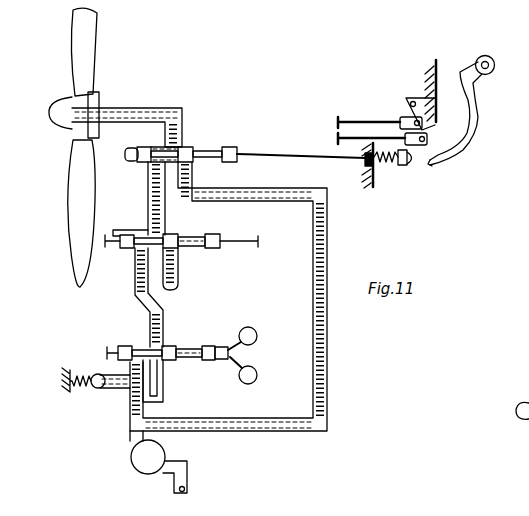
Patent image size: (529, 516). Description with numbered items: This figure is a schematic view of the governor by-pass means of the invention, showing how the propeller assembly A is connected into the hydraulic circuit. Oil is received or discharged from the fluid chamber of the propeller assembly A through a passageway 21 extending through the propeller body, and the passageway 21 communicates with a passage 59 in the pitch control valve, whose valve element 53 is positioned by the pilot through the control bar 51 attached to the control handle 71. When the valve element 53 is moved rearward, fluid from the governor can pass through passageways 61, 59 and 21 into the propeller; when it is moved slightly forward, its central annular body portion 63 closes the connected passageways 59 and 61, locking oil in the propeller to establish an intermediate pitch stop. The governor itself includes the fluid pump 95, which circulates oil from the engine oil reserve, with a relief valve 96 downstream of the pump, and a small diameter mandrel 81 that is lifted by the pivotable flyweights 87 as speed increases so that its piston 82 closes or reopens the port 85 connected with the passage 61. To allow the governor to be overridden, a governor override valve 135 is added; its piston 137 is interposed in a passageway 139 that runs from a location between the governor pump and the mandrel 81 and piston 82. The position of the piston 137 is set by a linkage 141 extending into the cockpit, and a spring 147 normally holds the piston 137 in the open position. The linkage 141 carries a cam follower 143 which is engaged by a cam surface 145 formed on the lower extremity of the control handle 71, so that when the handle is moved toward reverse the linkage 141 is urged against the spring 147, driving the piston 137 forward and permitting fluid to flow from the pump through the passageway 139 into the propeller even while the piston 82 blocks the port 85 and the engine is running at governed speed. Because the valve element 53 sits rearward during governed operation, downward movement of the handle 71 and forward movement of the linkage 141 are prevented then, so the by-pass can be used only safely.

The propeller assembly A is at (54, 161).
The passageway 21 is at (155, 108).
The control bar 51 is at (391, 120).
The valve element 53 is at (107, 247).
The passage 59 is at (150, 214).
The passageway 61 is at (135, 291).
The central annular body portion 63 is at (173, 236).
The control handle 71 is at (469, 92).
The small diameter mandrel 81 is at (194, 350).
The piston 82 is at (168, 359).
The port 85 is at (164, 391).
The flyweights 87 is at (244, 373).
The fluid pump 95 is at (163, 452).
The relief valve 96 is at (91, 374).
The governor override valve 135 is at (221, 169).
The piston 137 is at (190, 149).
The passageway 139 is at (283, 188).
The linkage 141 is at (306, 155).
The cam follower 143 is at (416, 172).
The cam surface 145 is at (428, 163).
The spring 147 is at (393, 172).